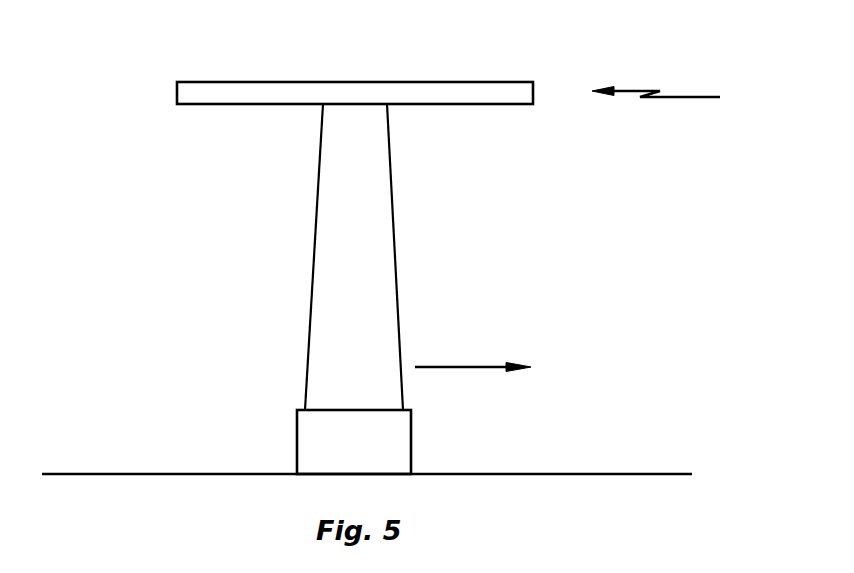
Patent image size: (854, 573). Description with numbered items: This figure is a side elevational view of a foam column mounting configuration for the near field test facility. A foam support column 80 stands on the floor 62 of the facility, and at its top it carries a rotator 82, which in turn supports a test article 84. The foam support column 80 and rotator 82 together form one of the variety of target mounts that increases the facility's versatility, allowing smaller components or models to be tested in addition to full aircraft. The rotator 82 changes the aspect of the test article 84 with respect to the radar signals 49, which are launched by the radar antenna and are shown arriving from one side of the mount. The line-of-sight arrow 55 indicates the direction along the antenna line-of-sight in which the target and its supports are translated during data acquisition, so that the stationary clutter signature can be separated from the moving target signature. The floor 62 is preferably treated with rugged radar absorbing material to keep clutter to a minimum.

The test article 84 is at (502, 96).
The foam support column 80 is at (388, 229).
The rotator 82 is at (378, 443).
The floor 62 is at (622, 474).
The radar signals 49 is at (707, 97).
The line-of-sight arrow 55 is at (490, 362).